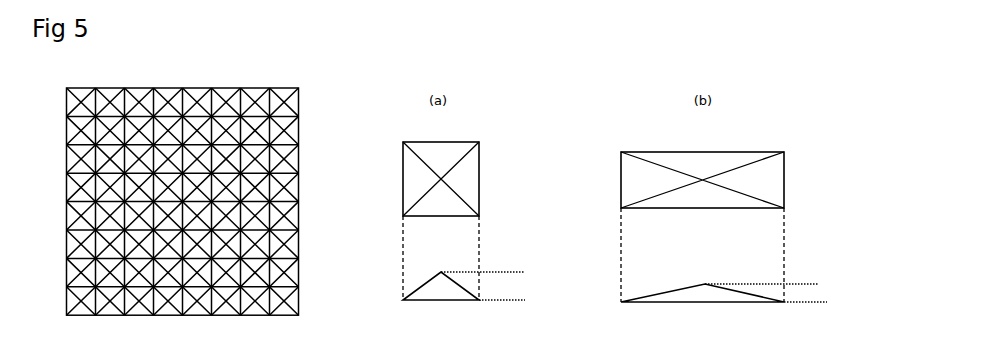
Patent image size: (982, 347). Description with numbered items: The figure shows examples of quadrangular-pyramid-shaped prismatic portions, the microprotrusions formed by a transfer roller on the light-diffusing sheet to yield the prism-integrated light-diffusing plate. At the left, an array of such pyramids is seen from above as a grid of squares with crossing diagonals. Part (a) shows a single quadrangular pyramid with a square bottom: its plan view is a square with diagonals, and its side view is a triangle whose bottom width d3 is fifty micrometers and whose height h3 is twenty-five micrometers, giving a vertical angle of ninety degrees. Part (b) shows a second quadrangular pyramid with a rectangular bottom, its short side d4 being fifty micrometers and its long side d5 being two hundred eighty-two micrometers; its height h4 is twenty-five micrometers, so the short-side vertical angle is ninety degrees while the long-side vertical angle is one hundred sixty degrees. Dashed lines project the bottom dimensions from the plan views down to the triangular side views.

The height h3 is at (507, 293).
The bottom width d3 is at (440, 316).
The short side of rectangular bottom d4 is at (803, 183).
The height h4 is at (805, 295).
The long side of rectangular bottom d5 is at (696, 322).